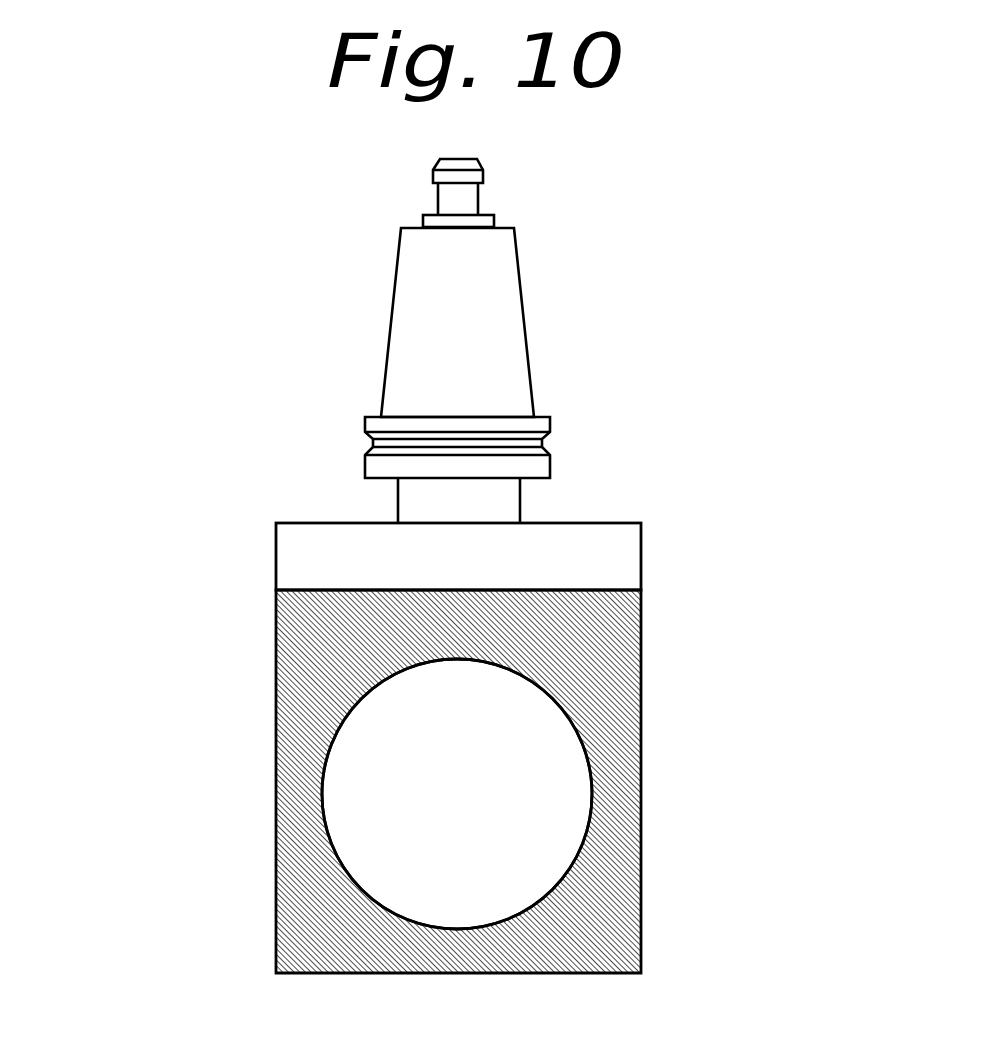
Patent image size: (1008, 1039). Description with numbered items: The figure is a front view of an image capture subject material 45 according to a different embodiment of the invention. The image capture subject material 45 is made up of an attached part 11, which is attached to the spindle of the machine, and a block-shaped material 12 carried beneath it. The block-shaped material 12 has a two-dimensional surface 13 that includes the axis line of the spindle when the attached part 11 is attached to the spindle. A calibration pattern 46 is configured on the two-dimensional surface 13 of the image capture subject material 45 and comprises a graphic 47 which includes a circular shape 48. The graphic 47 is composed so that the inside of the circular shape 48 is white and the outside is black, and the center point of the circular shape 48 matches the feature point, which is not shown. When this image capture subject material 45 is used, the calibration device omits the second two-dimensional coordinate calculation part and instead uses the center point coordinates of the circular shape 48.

The attached part 11 is at (510, 348).
The block-shaped material 12 is at (628, 560).
The two-dimensional surface 13 is at (602, 670).
The image capture subject material 45 is at (175, 310).
The calibration pattern 46 is at (446, 728).
The graphic 47 is at (663, 912).
The circular shape 48 is at (581, 848).